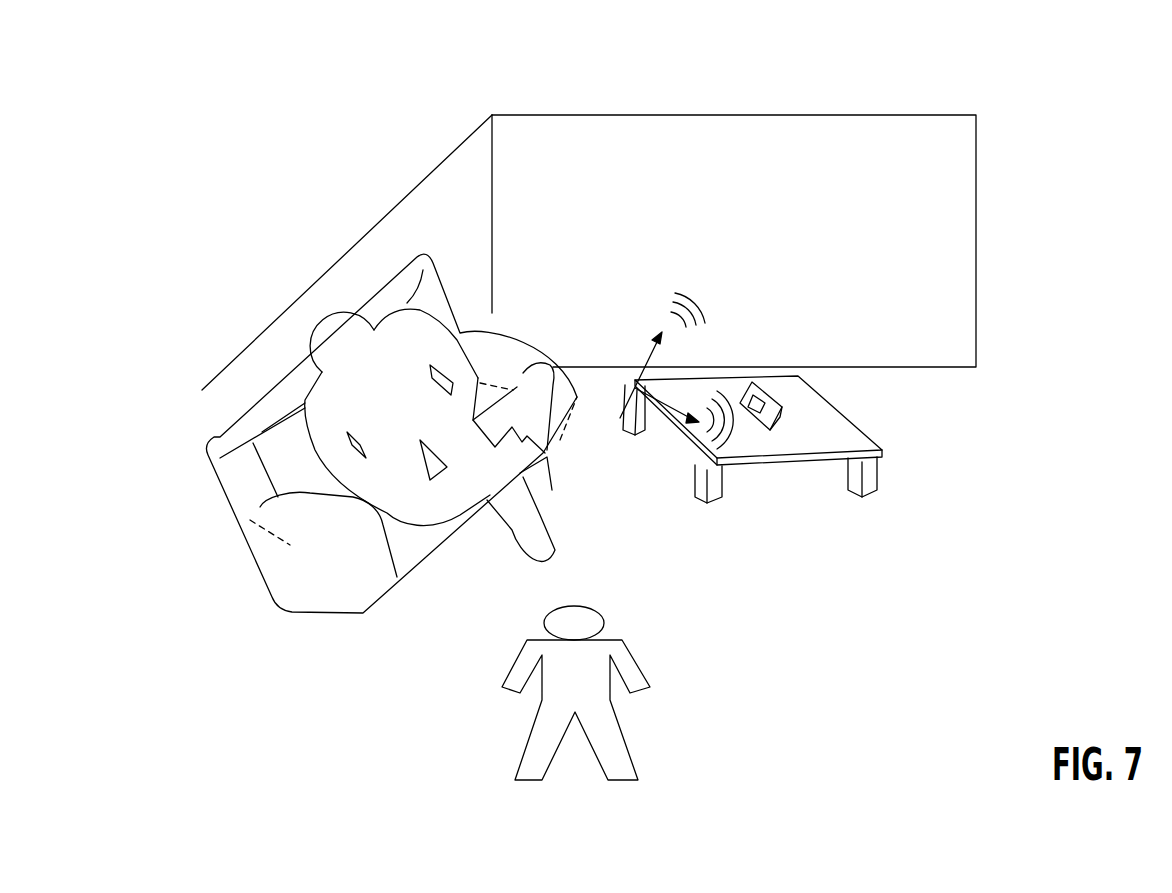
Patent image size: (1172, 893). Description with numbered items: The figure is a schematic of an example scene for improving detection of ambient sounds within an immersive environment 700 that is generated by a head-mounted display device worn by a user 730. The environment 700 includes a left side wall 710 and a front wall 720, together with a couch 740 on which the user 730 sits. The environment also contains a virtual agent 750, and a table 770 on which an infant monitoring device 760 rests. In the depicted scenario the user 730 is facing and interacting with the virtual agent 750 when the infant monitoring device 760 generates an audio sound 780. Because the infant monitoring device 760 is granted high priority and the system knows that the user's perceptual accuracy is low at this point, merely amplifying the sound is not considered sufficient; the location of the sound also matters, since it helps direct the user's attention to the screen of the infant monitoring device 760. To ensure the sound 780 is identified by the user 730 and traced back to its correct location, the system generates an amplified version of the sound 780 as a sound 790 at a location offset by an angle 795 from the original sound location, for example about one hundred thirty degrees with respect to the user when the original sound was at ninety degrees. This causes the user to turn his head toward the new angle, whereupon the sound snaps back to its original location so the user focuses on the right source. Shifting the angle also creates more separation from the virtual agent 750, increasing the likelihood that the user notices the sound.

The immersive environment 700 is at (318, 66).
The left side wall 710 is at (387, 207).
The front wall 720 is at (840, 115).
The user 730 is at (328, 315).
The couch 740 is at (318, 612).
The virtual agent 750 is at (623, 735).
The infant monitoring device 760 is at (772, 393).
The table 770 is at (843, 410).
The audio sound 780 is at (728, 425).
The sound 790 is at (695, 325).
The angle 795 is at (625, 386).